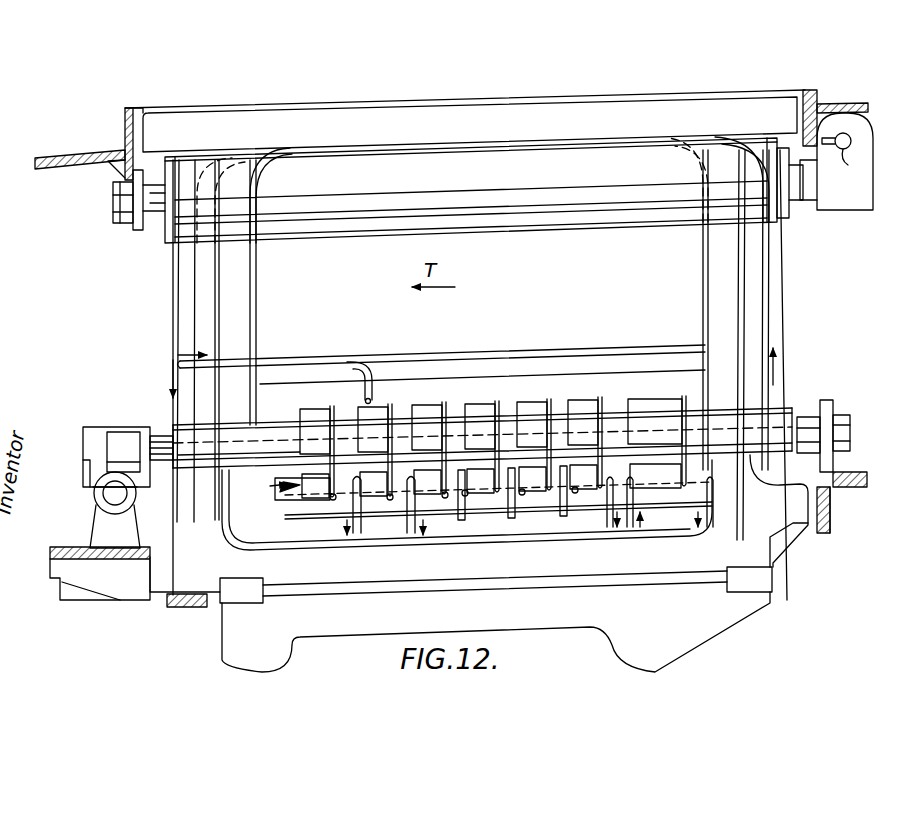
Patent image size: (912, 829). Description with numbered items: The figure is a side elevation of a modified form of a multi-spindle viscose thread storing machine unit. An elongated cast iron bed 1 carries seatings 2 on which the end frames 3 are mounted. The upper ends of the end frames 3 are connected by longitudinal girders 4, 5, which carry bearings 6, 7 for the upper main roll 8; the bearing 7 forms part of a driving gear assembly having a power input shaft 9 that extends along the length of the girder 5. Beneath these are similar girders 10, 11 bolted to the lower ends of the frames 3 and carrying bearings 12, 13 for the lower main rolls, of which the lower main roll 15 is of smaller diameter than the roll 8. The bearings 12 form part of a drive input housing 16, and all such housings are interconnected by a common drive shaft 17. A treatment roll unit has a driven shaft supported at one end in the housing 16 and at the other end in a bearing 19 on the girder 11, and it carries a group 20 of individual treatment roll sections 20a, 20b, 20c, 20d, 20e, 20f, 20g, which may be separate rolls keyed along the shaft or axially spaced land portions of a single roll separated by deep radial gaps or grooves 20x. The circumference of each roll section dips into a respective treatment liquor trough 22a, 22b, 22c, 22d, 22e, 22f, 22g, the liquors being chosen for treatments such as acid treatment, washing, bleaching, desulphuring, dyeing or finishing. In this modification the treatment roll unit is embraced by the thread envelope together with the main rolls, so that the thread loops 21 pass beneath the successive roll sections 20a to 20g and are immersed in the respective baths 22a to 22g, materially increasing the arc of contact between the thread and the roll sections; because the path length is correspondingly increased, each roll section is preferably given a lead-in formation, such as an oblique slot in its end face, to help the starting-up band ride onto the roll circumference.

The bed 1 is at (360, 627).
The seatings 2 is at (228, 598).
The end frames 3 is at (218, 269).
The longitudinal girder 4 is at (80, 153).
The longitudinal girder 5 is at (862, 111).
The bearing 6 is at (118, 222).
The bearing 7 is at (838, 214).
The upper main roll 8 is at (340, 244).
The power input shaft 9 is at (843, 152).
The lower girder 10 is at (72, 553).
The lower girder 11 is at (862, 480).
The bearing 12 is at (123, 432).
The bearing 13 is at (808, 418).
The lower main roll 15 is at (211, 470).
The drive input housing 16 is at (90, 428).
The common drive shaft 17 is at (108, 495).
The bearing 19 is at (838, 418).
The group of treatment rolls 20 is at (301, 418).
The treatment roll section 20a is at (652, 400).
The treatment roll section 20b is at (577, 397).
The treatment roll section 20c is at (533, 400).
The treatment roll section 20d is at (487, 403).
The treatment roll section 20e is at (427, 403).
The treatment roll section 20f is at (372, 405).
The treatment roll section 20g is at (306, 407).
The radial gaps or grooves 20x is at (333, 403).
The thread loops 21 is at (770, 315).
The treatment liquor trough 22a is at (660, 498).
The treatment liquor trough 22b is at (592, 526).
The treatment liquor trough 22c is at (528, 528).
The treatment liquor trough 22d is at (462, 528).
The treatment liquor trough 22e is at (400, 528).
The treatment liquor trough 22f is at (343, 528).
The treatment liquor trough 22g is at (275, 510).